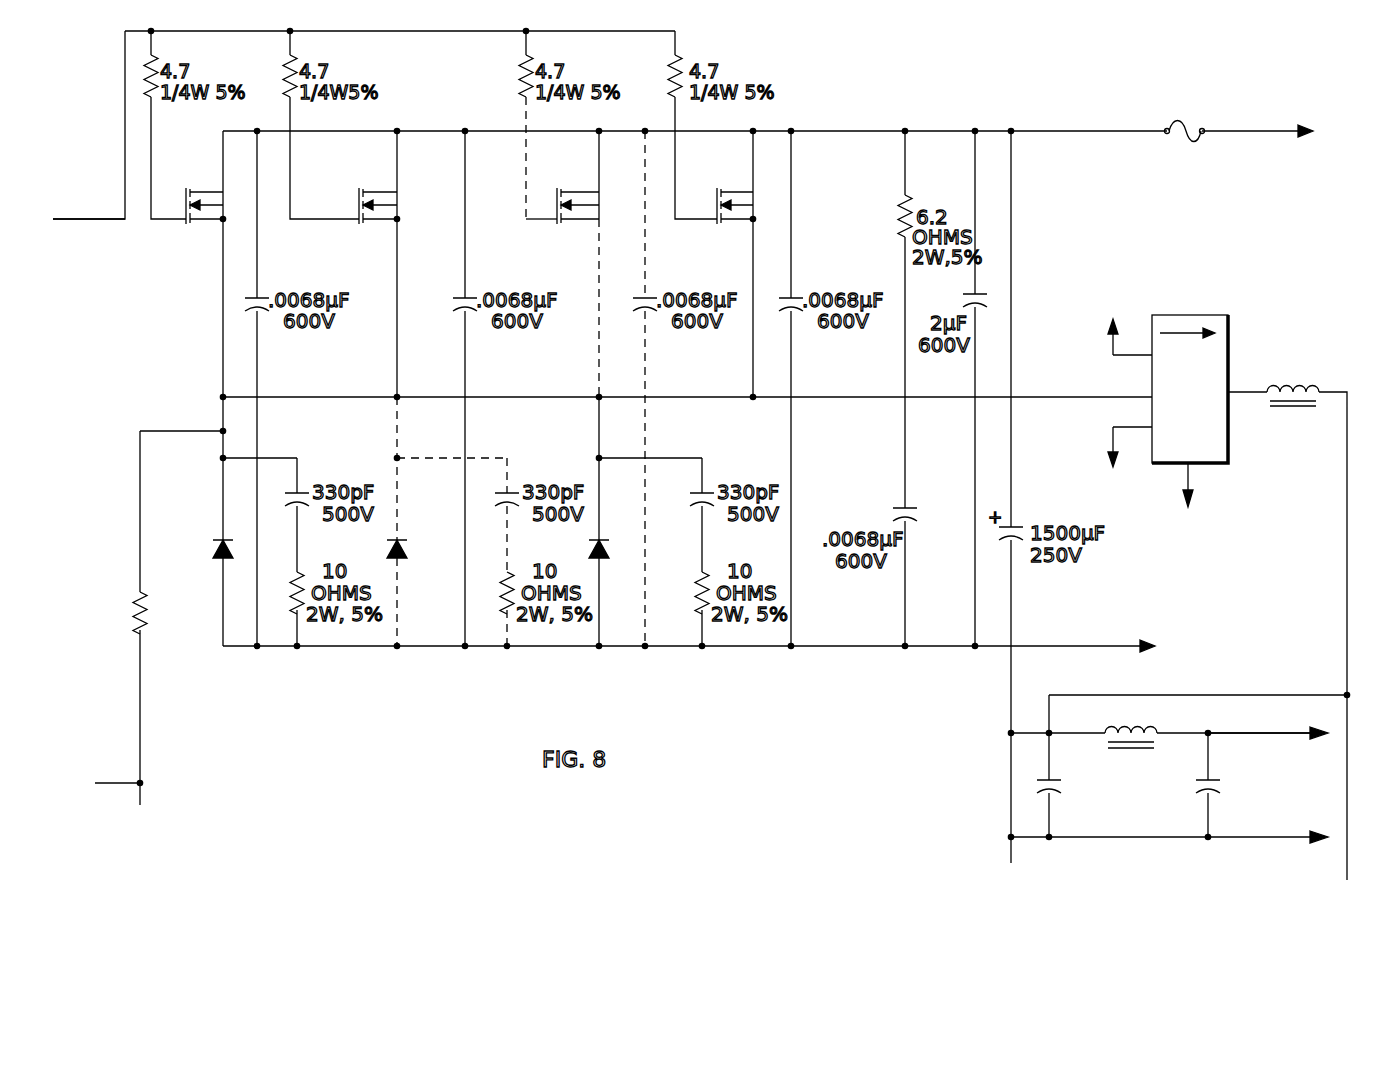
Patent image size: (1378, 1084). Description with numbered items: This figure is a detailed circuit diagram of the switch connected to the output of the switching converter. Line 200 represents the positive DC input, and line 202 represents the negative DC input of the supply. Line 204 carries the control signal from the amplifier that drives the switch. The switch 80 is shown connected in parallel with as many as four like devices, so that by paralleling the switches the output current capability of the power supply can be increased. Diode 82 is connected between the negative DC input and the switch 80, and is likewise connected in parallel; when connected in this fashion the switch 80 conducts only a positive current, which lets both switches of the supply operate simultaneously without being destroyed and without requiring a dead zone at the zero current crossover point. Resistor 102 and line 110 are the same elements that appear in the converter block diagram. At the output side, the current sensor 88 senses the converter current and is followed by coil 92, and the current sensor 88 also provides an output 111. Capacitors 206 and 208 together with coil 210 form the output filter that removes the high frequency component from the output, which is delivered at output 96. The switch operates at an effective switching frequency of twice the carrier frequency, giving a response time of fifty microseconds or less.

The line 204 is at (108, 219).
The switch 80 is at (194, 188).
The line 200 is at (1022, 129).
The current sensor 88 is at (1192, 315).
The coil 92 is at (1305, 392).
The current sense output 111 is at (1193, 476).
The diode 82 is at (216, 557).
The resistor 102 is at (131, 600).
The line 110 is at (127, 783).
The line 202 is at (1060, 646).
The coil 210 is at (1077, 733).
The capacitor 206 is at (1049, 780).
The capacitor 208 is at (1200, 782).
The output 96 is at (1283, 736).